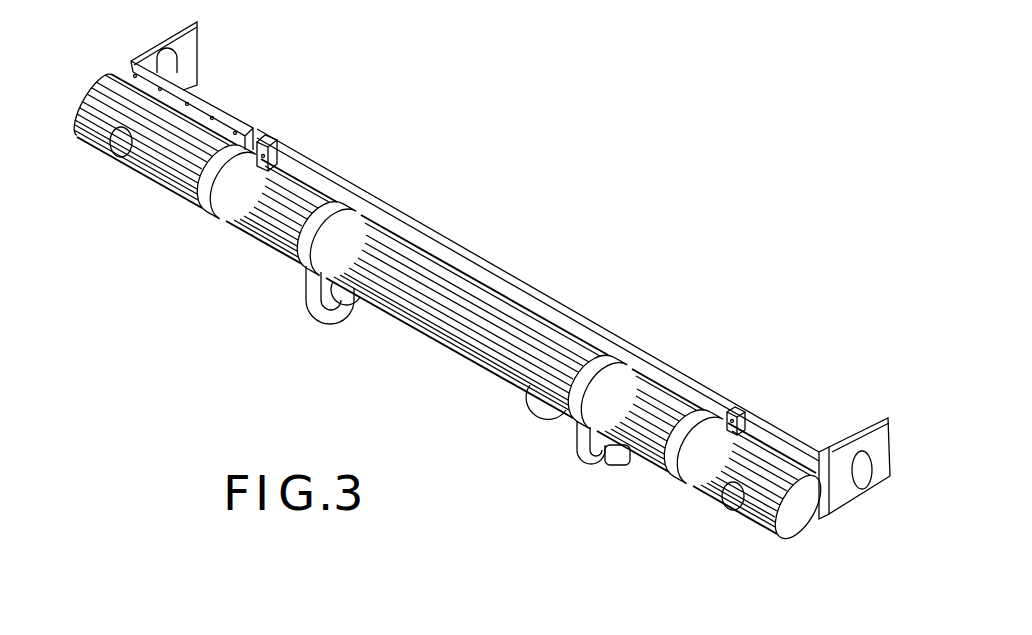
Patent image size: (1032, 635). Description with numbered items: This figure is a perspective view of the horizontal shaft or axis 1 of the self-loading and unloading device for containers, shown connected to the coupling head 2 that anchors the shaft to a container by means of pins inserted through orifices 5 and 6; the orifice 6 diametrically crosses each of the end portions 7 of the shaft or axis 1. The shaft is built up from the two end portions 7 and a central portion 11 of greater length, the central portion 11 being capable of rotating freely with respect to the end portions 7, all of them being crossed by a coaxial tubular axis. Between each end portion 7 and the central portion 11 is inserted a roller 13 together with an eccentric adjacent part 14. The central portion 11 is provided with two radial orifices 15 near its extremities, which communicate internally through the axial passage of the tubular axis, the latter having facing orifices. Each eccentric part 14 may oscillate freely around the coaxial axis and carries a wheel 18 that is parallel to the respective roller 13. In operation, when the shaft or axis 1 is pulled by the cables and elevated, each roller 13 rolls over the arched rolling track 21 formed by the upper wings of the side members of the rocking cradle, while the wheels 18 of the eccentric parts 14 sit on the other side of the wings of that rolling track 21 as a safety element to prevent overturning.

The horizontal shaft or axis 1 is at (230, 265).
The coupling head 2 is at (807, 443).
The orifice 5 is at (862, 478).
The orifice 6 is at (733, 500).
The end portion 7 is at (180, 182).
The central portion 11 is at (455, 278).
The roller 13 is at (280, 177).
The eccentric adjacent part 14 is at (313, 280).
The radial orifice 15 is at (513, 390).
The wheel 18 is at (613, 453).
The rolling track 21 is at (208, 90).